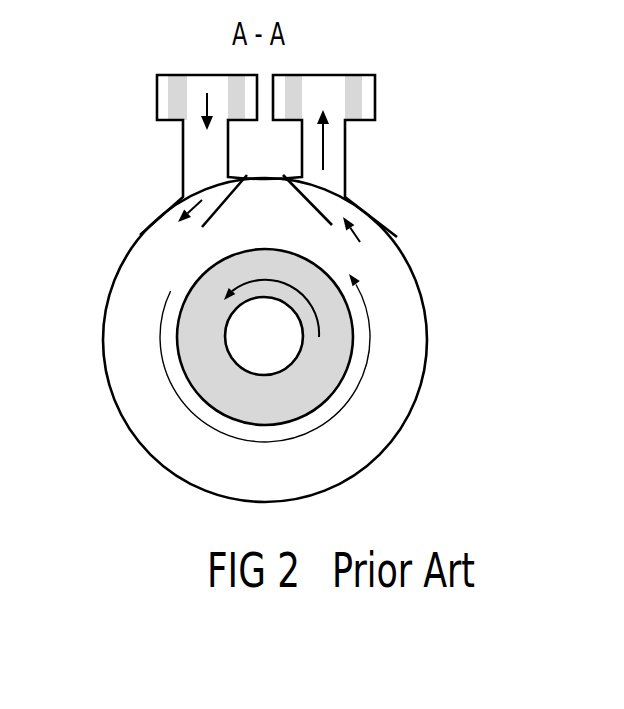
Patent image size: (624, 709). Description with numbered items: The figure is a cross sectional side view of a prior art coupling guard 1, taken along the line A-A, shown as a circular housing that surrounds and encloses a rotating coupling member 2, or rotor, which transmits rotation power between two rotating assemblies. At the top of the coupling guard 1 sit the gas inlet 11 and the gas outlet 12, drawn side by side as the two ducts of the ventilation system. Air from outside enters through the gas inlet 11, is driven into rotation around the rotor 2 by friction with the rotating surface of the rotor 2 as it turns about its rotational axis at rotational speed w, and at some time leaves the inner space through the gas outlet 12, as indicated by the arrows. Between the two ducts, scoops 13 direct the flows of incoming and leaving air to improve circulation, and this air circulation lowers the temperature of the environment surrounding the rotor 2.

The coupling guard 1 is at (425, 305).
The rotating coupling member 2 is at (178, 353).
The gas inlet 11 is at (146, 68).
The gas outlet 12 is at (394, 72).
The scoop 13 is at (292, 188).